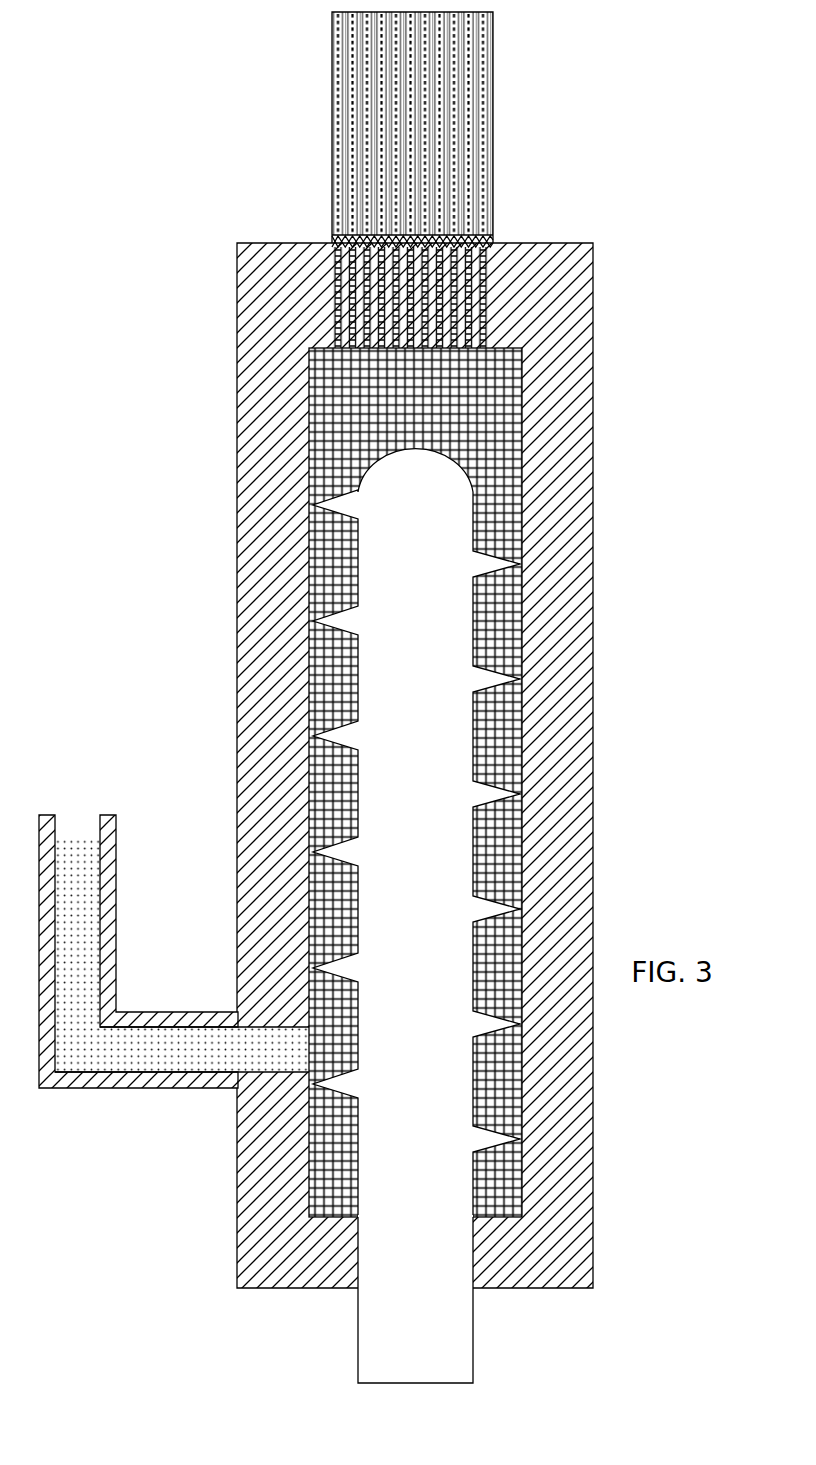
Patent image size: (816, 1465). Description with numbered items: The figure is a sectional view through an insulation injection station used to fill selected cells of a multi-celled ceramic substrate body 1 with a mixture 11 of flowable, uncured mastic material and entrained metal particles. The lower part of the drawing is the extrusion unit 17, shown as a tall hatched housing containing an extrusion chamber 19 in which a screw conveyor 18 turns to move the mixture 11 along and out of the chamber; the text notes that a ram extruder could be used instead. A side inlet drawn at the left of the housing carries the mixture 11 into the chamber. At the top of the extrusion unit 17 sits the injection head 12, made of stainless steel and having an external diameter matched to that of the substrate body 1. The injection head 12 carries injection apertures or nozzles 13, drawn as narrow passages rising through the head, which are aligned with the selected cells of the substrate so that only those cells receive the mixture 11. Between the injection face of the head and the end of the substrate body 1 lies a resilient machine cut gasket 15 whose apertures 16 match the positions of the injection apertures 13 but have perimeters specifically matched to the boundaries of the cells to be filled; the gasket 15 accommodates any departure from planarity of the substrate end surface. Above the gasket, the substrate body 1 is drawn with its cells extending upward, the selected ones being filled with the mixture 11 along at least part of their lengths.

The multi-celled ceramic substrate body 1 is at (298, 83).
The mixture 11 is at (453, 188).
The injection head 12 is at (300, 288).
The injection apertures 13 is at (487, 257).
The gasket 15 is at (336, 238).
The gasket apertures 16 is at (492, 240).
The extrusion unit 17 is at (388, 813).
The screw conveyor 18 is at (400, 539).
The extrusion chamber 19 is at (508, 764).